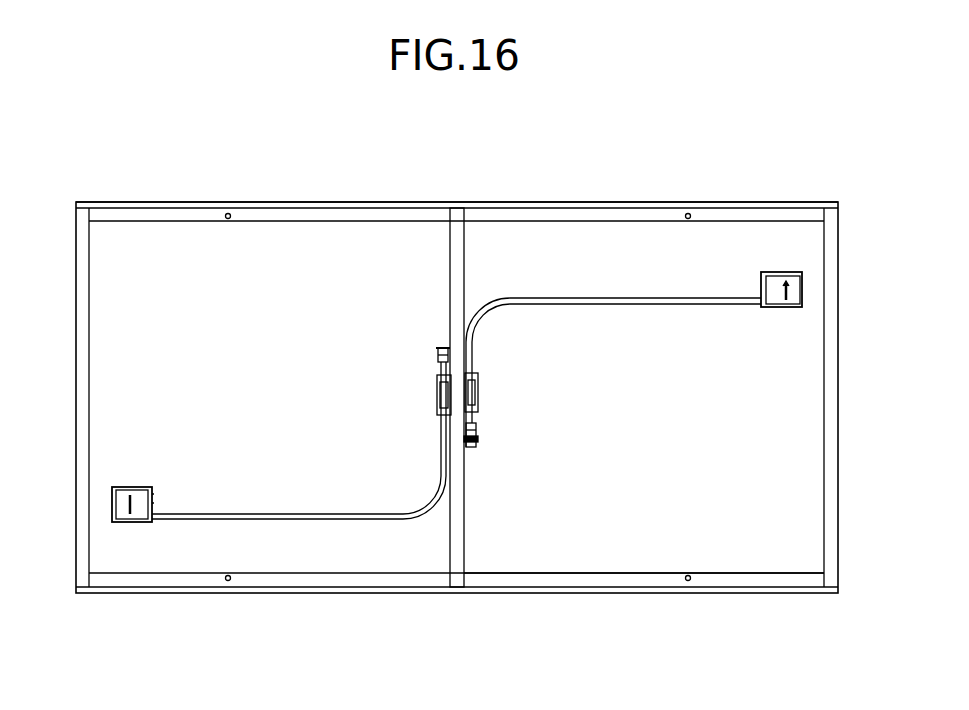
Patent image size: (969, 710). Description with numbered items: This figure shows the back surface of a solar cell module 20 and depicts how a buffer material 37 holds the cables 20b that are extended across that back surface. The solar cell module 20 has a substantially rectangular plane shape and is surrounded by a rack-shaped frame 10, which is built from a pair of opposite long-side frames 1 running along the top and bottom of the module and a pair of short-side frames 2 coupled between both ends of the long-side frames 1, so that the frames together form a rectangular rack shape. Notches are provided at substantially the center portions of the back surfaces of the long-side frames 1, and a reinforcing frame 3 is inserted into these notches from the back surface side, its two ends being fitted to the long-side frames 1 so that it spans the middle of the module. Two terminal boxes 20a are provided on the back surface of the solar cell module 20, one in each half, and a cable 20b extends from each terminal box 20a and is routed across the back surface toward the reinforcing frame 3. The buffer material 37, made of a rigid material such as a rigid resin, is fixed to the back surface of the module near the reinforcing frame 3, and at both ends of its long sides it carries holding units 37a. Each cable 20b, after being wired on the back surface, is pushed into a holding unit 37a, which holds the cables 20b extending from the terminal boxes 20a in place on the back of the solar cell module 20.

The long-side frame 1 is at (405, 202).
The short-side frame 2 is at (76, 352).
The reinforcing frame 3 is at (450, 257).
The rack-shaped frame 10 is at (279, 202).
The solar cell module 20 is at (663, 545).
The terminal box 20a is at (112, 507).
The cable 20b is at (262, 512).
The buffer material 37 is at (478, 406).
The holding unit 37a is at (438, 400).